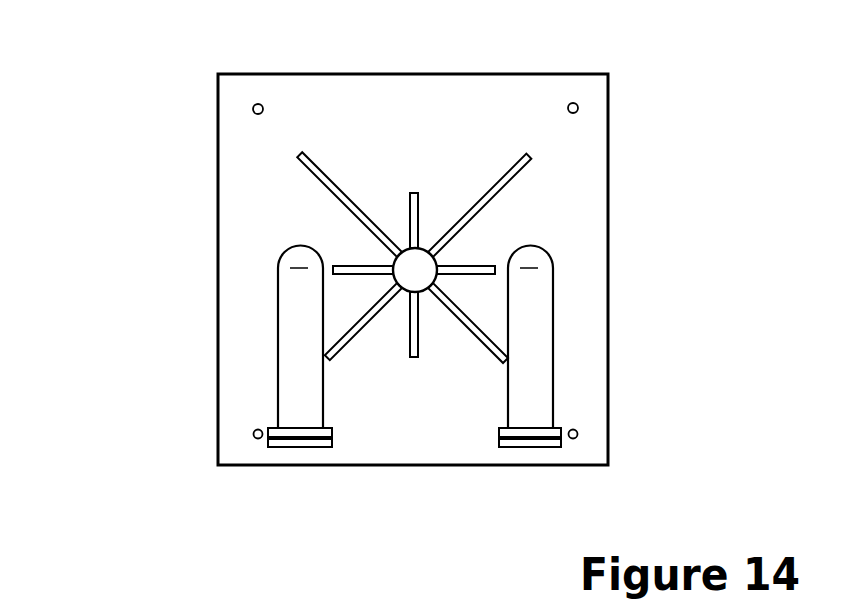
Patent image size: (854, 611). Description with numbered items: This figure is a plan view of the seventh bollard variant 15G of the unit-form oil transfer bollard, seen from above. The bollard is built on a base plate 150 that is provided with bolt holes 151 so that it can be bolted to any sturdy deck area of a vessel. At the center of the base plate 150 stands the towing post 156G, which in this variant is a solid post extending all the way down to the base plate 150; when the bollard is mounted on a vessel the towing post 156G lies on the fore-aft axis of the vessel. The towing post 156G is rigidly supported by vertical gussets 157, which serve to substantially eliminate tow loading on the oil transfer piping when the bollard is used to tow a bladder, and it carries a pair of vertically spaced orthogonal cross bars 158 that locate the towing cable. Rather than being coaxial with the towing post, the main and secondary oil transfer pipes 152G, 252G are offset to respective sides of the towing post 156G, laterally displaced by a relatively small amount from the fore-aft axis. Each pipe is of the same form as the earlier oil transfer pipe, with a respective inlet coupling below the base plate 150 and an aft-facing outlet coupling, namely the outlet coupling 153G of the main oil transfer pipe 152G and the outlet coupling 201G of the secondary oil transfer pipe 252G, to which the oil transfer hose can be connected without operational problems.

The seventh bollard variant 15G is at (142, 144).
The base plate 150 is at (380, 82).
The bolt holes 151 is at (261, 114).
The main oil transfer pipe 152G is at (278, 307).
The secondary oil transfer pipe 252G is at (555, 314).
The aft-facing outlet coupling 153G is at (302, 447).
The aft-facing outlet coupling 201G is at (527, 447).
The towing post 156G is at (422, 248).
The vertical gussets 157 is at (343, 208).
The orthogonal cross bars 158 is at (343, 270).